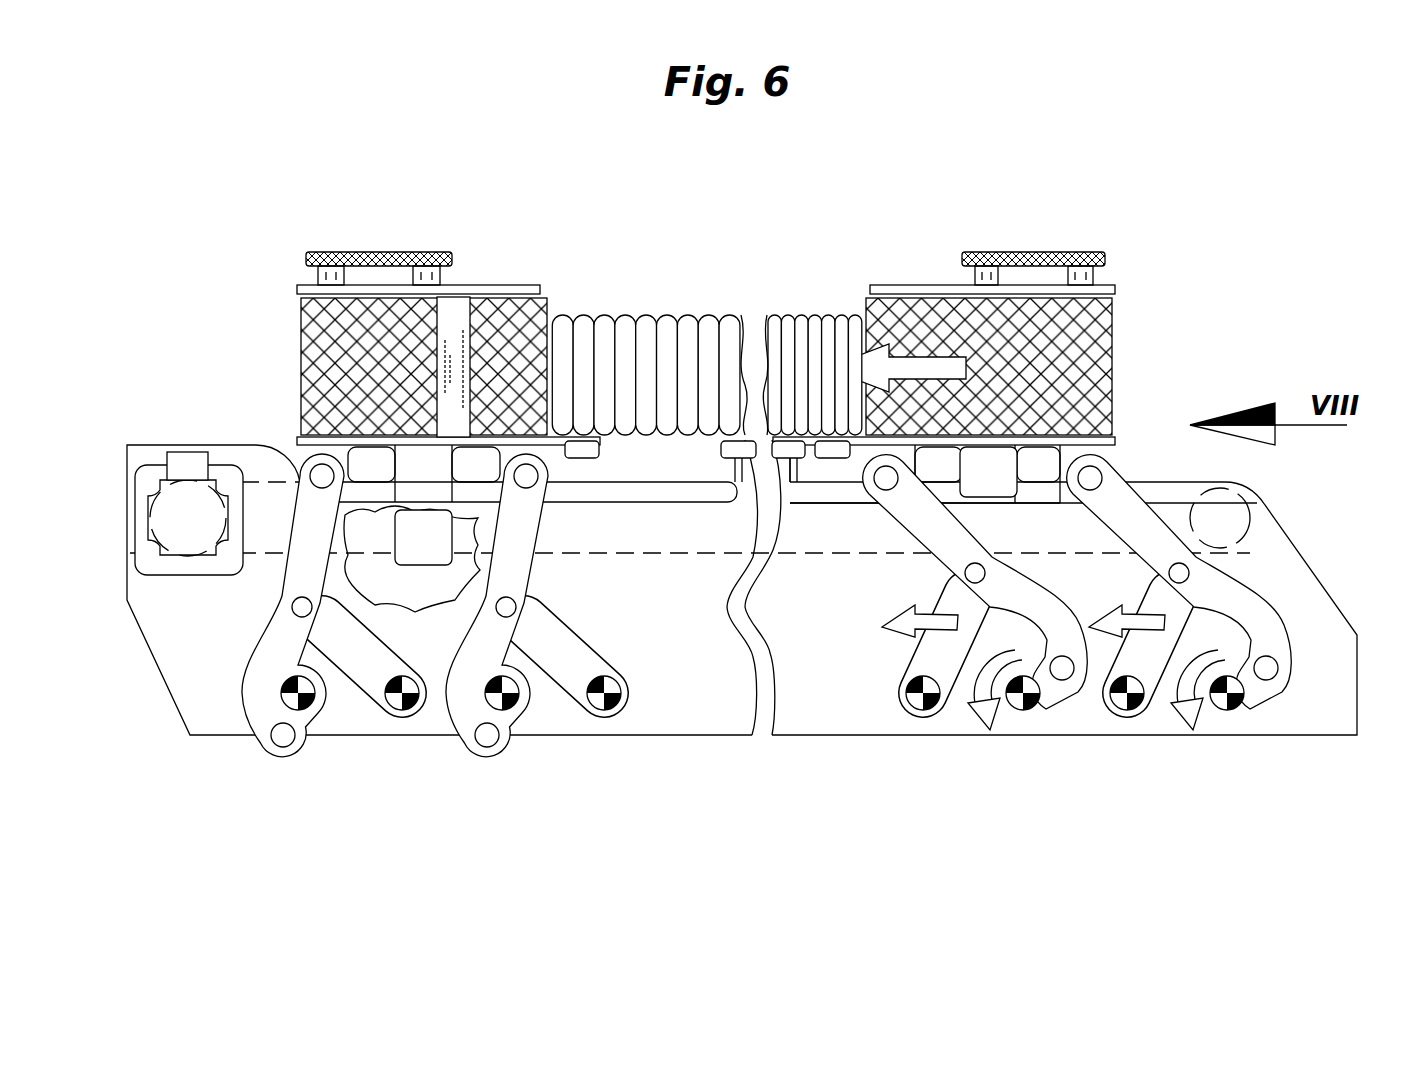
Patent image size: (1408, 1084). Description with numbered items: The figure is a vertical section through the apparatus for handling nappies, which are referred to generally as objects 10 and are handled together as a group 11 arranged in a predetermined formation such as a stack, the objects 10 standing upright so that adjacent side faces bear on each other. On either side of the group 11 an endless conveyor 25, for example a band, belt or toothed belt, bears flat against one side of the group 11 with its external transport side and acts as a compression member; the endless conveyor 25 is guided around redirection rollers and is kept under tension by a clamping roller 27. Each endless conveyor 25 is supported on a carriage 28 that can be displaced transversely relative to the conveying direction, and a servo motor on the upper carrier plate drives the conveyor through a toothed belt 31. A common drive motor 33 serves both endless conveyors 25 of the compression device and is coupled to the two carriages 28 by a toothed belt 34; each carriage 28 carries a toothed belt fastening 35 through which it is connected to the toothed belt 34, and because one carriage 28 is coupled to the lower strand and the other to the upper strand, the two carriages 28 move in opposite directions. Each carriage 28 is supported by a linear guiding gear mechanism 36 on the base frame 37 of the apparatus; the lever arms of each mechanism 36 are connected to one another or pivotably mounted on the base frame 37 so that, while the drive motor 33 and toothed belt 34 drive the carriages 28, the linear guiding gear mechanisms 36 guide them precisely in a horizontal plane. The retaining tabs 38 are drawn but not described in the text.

The object 10 is at (707, 324).
The group 11 is at (638, 302).
The endless conveyor 25 is at (320, 348).
The clamping roller 27 is at (452, 308).
The carriage 28 is at (290, 432).
The toothed belt 31 is at (380, 252).
The drive motor 33 is at (175, 522).
The toothed belt 34 is at (650, 558).
The toothed belt fastening 35 is at (425, 565).
The linear guiding gear mechanism 36 is at (233, 752).
The base frame 37 is at (1322, 635).
The retaining tab 38 is at (725, 447).